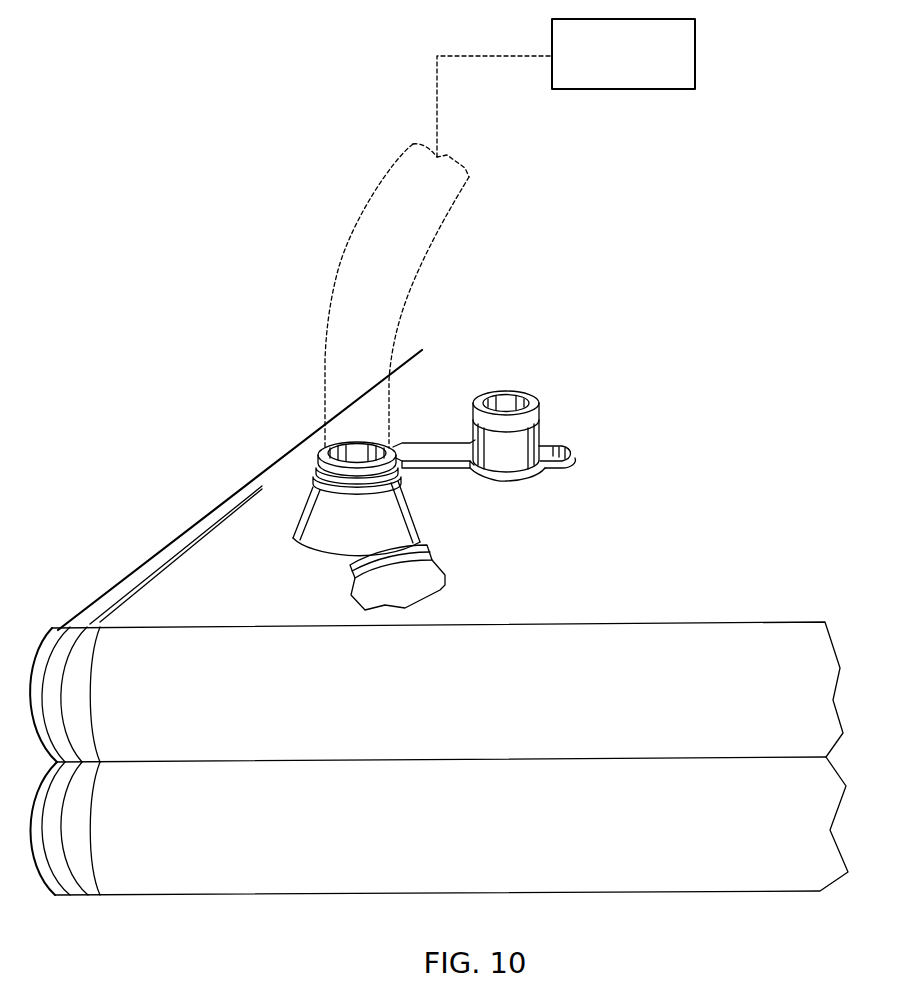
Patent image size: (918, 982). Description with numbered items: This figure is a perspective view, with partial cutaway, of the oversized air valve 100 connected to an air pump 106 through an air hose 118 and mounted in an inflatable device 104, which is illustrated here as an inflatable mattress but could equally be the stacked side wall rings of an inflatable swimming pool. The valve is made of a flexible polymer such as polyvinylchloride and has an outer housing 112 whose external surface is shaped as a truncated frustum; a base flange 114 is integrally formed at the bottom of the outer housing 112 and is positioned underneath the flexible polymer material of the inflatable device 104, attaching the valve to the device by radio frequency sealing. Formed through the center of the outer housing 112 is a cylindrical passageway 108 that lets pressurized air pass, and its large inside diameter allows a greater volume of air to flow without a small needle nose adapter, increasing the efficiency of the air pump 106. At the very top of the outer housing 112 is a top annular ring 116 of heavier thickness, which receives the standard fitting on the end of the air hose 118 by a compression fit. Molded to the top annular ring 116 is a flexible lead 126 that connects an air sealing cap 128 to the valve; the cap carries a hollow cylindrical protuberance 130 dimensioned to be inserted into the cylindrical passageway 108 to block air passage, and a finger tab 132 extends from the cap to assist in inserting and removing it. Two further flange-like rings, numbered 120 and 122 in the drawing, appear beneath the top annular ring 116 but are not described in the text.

The oversized air valve 100 is at (291, 481).
The inflatable device 104 is at (100, 593).
The air pump 106 is at (695, 60).
The cylindrical passageway 108 is at (356, 452).
The outer housing 112 is at (315, 525).
The base flange 114 is at (445, 588).
The top annular ring 116 is at (329, 453).
The air hose 118 is at (405, 260).
The lower flange 120 is at (400, 478).
The upper flange 122 is at (360, 483).
The flexible lead 126 is at (428, 447).
The air sealing cap 128 is at (540, 441).
The hollow cylindrical protuberance 130 is at (520, 390).
The finger tab 132 is at (576, 455).